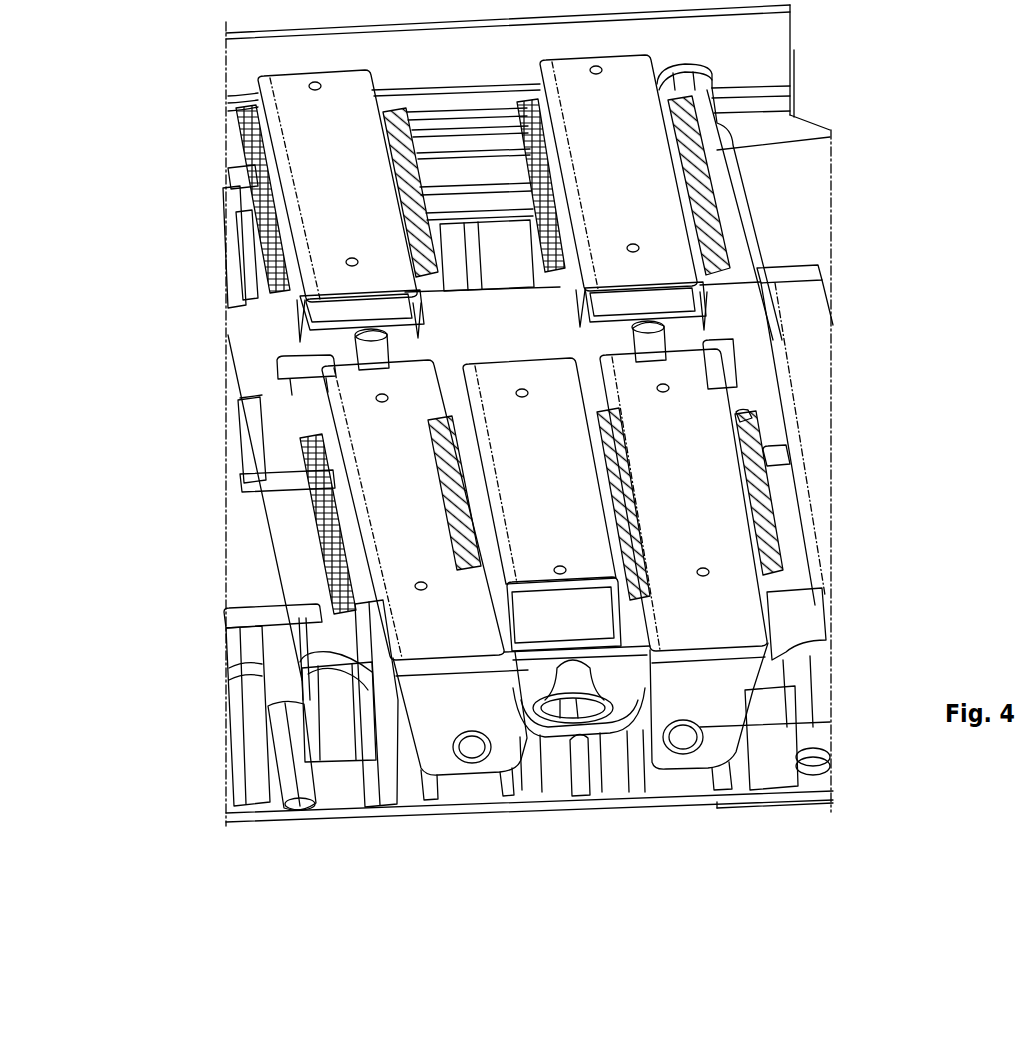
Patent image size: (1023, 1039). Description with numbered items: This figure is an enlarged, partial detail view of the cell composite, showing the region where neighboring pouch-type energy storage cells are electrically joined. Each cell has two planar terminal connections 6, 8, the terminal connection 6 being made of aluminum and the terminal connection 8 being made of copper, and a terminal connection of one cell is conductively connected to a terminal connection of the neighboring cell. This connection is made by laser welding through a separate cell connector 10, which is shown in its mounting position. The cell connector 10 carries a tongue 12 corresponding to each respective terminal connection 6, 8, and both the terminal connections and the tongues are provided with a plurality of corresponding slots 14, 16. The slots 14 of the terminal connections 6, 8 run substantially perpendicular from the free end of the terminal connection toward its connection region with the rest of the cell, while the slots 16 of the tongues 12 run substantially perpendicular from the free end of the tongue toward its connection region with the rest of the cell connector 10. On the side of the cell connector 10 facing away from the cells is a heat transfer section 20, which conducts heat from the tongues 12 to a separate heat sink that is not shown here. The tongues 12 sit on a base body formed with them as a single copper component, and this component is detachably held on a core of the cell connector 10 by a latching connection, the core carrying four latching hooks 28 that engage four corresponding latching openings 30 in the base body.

The terminal connection 6 is at (790, 141).
The terminal connection 8 is at (234, 148).
The cell connector 10 is at (478, 324).
The tongue 12 is at (384, 159).
The slot 14 is at (768, 424).
The slot 16 is at (735, 430).
The heat transfer section 20 is at (314, 117).
The latching hook 28 is at (283, 308).
The latching opening 30 is at (260, 287).